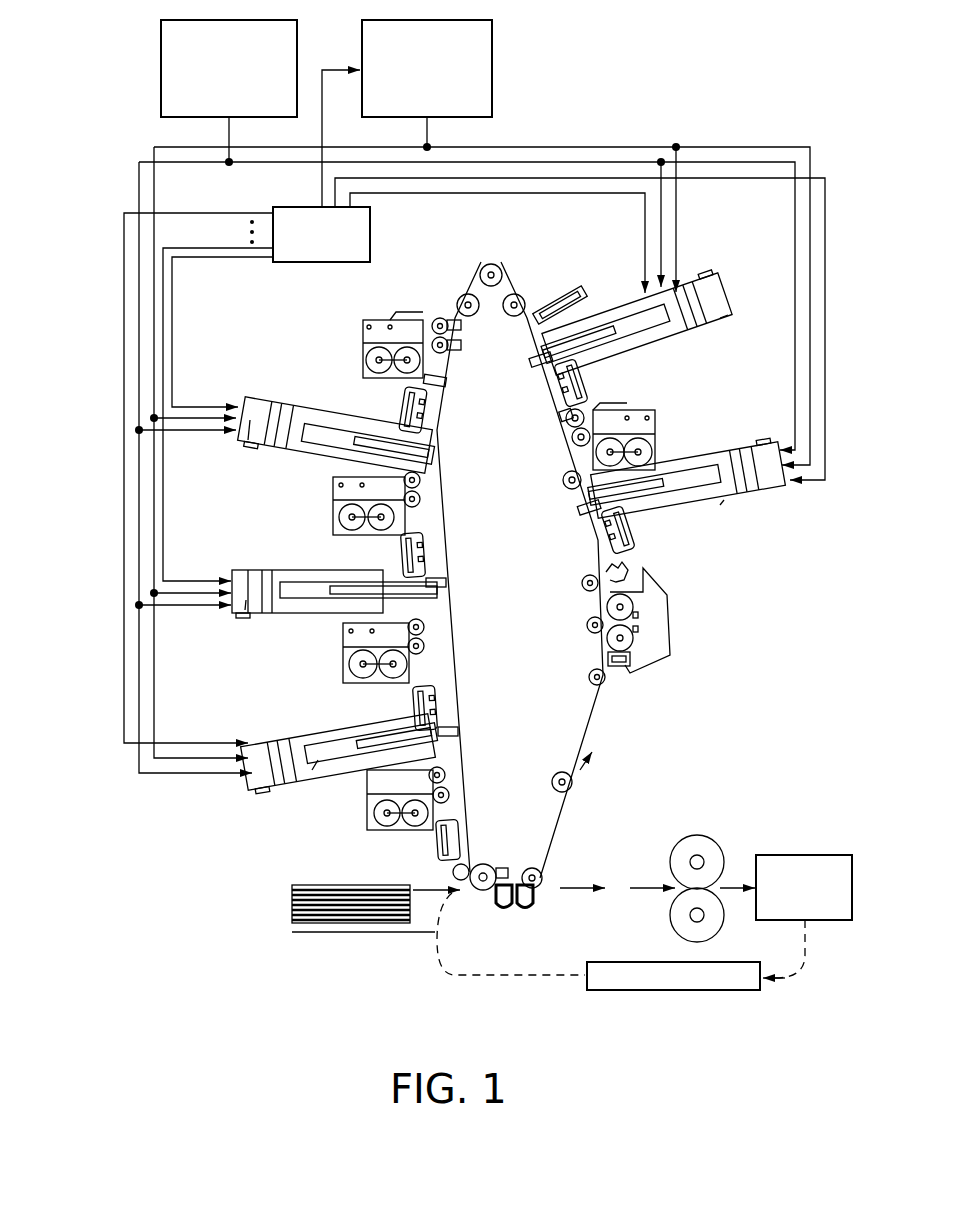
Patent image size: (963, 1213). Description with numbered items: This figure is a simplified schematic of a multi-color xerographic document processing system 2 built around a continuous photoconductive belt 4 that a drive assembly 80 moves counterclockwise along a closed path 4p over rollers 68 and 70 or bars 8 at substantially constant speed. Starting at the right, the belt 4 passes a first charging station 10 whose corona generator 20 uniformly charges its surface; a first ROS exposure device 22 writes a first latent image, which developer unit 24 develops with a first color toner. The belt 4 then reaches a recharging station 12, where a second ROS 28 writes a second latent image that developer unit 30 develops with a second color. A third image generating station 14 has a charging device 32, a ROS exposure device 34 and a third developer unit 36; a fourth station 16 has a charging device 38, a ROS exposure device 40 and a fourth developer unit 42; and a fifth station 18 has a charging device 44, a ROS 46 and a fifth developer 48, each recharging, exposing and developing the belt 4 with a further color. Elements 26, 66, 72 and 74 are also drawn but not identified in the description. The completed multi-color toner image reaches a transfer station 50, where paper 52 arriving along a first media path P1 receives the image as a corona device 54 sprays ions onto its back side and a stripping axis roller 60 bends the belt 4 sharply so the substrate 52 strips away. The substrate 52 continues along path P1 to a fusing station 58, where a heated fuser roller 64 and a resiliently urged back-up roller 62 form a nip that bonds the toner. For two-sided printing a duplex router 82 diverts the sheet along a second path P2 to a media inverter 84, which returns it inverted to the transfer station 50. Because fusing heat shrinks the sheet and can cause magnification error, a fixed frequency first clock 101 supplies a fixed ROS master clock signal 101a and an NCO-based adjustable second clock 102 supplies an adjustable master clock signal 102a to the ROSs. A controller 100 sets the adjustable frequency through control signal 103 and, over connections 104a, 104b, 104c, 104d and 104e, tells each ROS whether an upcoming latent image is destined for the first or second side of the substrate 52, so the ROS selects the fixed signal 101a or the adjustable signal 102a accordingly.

The multi-color xerographic document processing system 2 is at (92, 152).
The photoconductive imaging belt 4 is at (598, 742).
The closed path 4p is at (587, 776).
The bars 8 is at (455, 338).
The first charging station 10 is at (735, 440).
The recharging station 12 is at (713, 262).
The third image generating station 14 is at (313, 377).
The fourth image station 16 is at (297, 555).
The fifth station 18 is at (300, 718).
The corona generator 20 is at (624, 538).
The first raster output scanner exposure device 22 is at (722, 505).
The developer unit 24 is at (655, 445).
The print head 26 is at (588, 390).
The second ROS 28 is at (728, 316).
The subsequent developer unit 30 is at (382, 318).
The charging device 32 is at (400, 408).
The ROS exposure device 34 is at (248, 450).
The third developer unit 36 is at (333, 490).
The charging device 38 is at (393, 555).
The ROS exposure device 40 is at (245, 615).
The fourth developer unit 42 is at (343, 640).
The charging device 44 is at (407, 706).
The ROS 46 is at (318, 772).
The fifth developer 48 is at (368, 808).
The transfer station 50 is at (498, 922).
The paper substrate 52 is at (372, 932).
The corona device 54 is at (500, 913).
The fusing station 58 is at (680, 835).
The stripping axis roller 60 is at (526, 868).
The back-up roller 62 is at (672, 927).
The heated fuser roller 64 is at (722, 845).
The fixing station 66 is at (690, 590).
The roller 68 is at (552, 780).
The roller 70 is at (492, 262).
The guide roller 72 is at (590, 682).
The sensor 74 is at (625, 570).
The drive assembly 80 is at (572, 612).
The duplex router 82 is at (805, 855).
The media inverter 84 is at (672, 990).
The controller 100 is at (372, 240).
The fixed frequency clock source 101 is at (161, 70).
The fixed frequency ROS master clock signal 101a is at (229, 146).
The adjustable frequency clock source 102 is at (493, 70).
The adjustable frequency ROS master clock signal 102a is at (430, 122).
The control signal 103 is at (323, 118).
The connection 104a is at (800, 485).
The connection 104b is at (645, 255).
The connection 104c is at (172, 367).
The connection 104d is at (163, 560).
The connection 104e is at (176, 742).
The first substrate media path P1 is at (447, 883).
The second path P2 is at (482, 898).